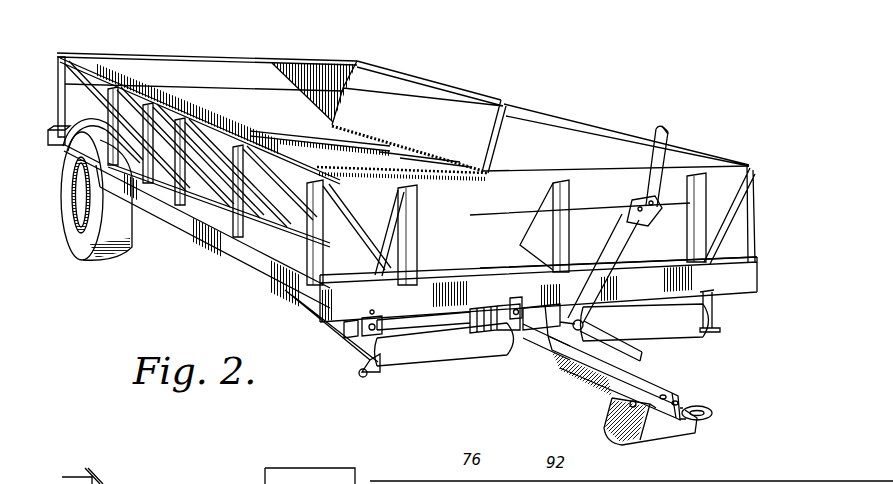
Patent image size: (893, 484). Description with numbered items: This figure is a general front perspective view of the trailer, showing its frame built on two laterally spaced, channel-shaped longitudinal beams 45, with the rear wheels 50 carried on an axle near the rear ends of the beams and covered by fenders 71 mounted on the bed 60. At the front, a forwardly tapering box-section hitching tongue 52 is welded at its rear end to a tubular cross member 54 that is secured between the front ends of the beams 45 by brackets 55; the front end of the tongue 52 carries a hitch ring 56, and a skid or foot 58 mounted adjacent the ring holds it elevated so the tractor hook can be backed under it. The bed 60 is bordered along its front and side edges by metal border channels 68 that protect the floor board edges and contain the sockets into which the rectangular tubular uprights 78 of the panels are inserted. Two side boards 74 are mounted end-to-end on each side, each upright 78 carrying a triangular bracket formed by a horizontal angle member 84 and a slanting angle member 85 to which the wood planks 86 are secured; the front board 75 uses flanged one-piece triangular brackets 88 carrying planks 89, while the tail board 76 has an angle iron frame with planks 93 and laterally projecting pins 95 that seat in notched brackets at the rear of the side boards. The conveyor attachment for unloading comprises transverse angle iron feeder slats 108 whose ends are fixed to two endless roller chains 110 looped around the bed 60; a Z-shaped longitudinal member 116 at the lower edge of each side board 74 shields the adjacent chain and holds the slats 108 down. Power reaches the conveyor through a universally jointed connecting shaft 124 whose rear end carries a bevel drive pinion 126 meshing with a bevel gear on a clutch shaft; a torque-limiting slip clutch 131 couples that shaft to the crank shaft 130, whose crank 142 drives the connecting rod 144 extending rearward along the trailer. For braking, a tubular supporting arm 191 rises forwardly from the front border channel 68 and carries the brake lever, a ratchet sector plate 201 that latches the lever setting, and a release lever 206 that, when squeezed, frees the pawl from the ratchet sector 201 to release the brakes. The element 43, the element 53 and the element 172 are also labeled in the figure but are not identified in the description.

The top chord rail 43 is at (284, 306).
The longitudinal beams 45 is at (717, 297).
The rear wheels 50 is at (83, 247).
The hitching tongue 52 is at (602, 382).
The hinge end piece 53 is at (371, 368).
The cross member 54 is at (457, 351).
The brackets 55 is at (703, 332).
The hitch ring 56 is at (706, 411).
The skid or foot 58 is at (668, 432).
The bed 60 is at (385, 160).
The border channels 68 is at (313, 322).
The fenders 71 is at (103, 158).
The side boards 74 is at (557, 112).
The front board 75 is at (603, 163).
The tail board 76 is at (302, 82).
The uprights 78 is at (183, 130).
The horizontal angle member 84 is at (193, 200).
The slanting angle member 85 is at (272, 203).
The wood planks 86 is at (398, 108).
The triangular metal bracket 88 is at (393, 223).
The wood planks 89 is at (503, 183).
The planks 93 is at (340, 84).
The pins 95 is at (655, 128).
The feeder slats 108 is at (279, 134).
The conveyor chains 110 is at (420, 160).
The longitudinal member 116 is at (446, 160).
The connecting shaft 124 is at (612, 346).
The bevel drive pinion 126 is at (546, 331).
The crank shaft 130 is at (412, 340).
The slip clutch 131 is at (514, 305).
The crank 142 is at (383, 309).
The connecting rod 144 is at (346, 317).
The lower rail 172 is at (258, 250).
The supporting arm 191 is at (600, 291).
The ratchet sector plate 201 is at (644, 203).
The release lever 206 is at (672, 136).